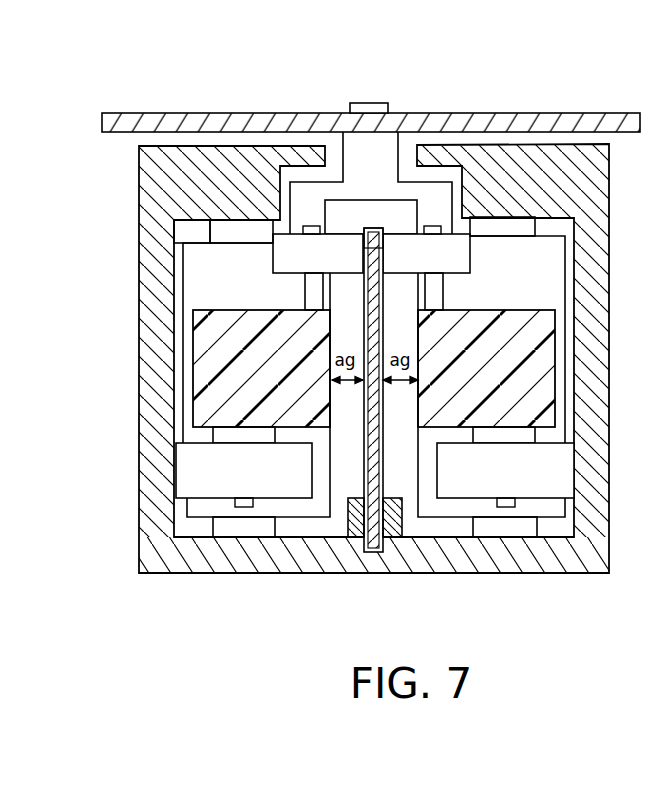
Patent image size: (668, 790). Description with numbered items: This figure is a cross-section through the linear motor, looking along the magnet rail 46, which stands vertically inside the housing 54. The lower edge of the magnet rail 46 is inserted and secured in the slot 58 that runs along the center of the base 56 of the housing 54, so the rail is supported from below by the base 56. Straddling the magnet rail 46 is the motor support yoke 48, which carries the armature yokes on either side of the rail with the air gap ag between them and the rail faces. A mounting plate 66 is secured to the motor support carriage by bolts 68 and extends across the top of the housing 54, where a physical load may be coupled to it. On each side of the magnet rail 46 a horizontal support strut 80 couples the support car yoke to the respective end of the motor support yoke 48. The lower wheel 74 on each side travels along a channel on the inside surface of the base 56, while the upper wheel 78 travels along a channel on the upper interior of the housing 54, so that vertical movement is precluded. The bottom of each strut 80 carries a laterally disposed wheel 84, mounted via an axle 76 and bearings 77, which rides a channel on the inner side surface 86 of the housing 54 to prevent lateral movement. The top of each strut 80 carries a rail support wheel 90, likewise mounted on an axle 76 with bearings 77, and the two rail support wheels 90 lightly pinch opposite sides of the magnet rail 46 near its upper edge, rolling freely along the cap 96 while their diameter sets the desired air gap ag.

The magnet rail 46 is at (363, 483).
The motor support yoke 48 is at (303, 185).
The housing 54 is at (150, 190).
The base 56 is at (472, 558).
The slot 58 is at (392, 521).
The mounting plate 66 is at (500, 117).
The bolts 68 is at (370, 102).
The lower wheel 74 is at (213, 572).
The axle 76 is at (305, 226).
The bearings 77 is at (305, 293).
The upper wheel 78 is at (227, 237).
The horizontal support strut 80 is at (225, 371).
The laterally disposed wheel 84 is at (245, 521).
The inner side surface 86 is at (195, 487).
The rail support wheel 90 is at (273, 256).
The cap 96 is at (374, 228).